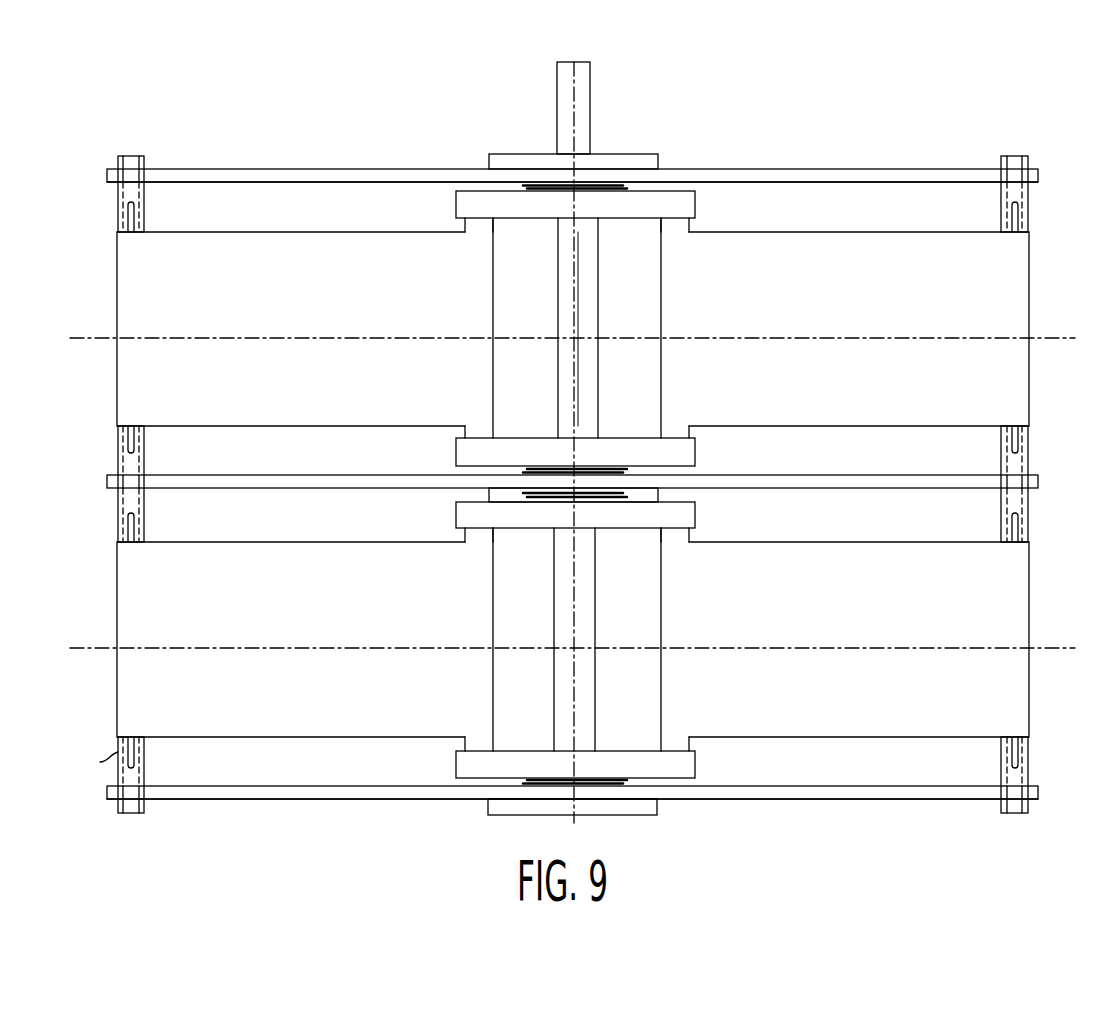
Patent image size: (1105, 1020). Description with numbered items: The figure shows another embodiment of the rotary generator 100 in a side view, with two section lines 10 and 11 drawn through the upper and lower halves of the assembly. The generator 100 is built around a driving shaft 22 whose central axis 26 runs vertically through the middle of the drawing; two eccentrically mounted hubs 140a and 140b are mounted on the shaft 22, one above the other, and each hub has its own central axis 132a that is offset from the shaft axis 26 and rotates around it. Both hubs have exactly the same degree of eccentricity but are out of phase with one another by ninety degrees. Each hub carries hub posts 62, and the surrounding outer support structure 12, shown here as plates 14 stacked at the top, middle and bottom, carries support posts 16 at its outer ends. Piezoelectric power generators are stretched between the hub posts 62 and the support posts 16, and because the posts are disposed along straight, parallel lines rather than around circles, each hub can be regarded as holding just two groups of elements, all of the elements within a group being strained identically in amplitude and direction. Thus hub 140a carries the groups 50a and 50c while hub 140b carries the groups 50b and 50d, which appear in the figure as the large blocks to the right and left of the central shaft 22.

The rotary generator 100 is at (111, 393).
The outer support structure 12 is at (295, 169).
The plate surface 14 is at (392, 178).
The support posts 16 is at (118, 215).
The driving shaft 22 is at (583, 117).
The central axis of driving shaft 26 is at (570, 325).
The hub posts 62 is at (465, 228).
The eccentrically mounted hub 140a is at (688, 205).
The eccentrically mounted hub 140b is at (688, 515).
The hub central axis 132a is at (575, 310).
The group of piezoelectric elements 50a is at (809, 290).
The group of piezoelectric elements 50b is at (823, 621).
The group of piezoelectric elements 50c is at (293, 290).
The group of piezoelectric elements 50d is at (293, 621).
The section line 10- 10 is at (70, 338).
The section line 11- 11 is at (70, 648).